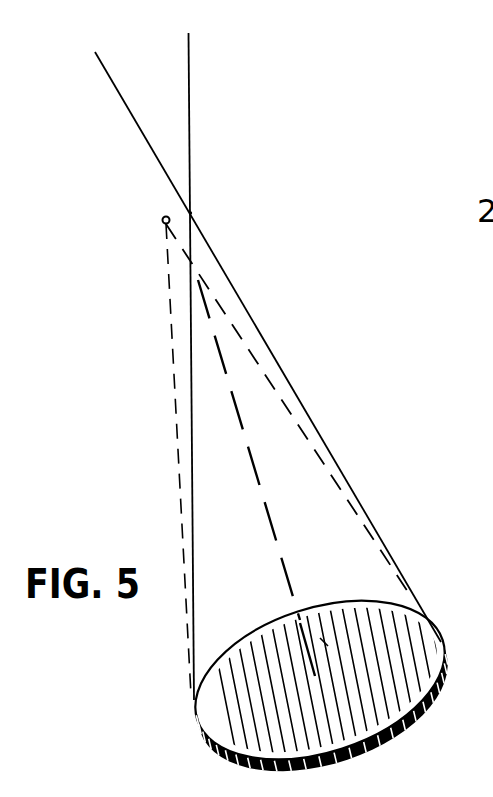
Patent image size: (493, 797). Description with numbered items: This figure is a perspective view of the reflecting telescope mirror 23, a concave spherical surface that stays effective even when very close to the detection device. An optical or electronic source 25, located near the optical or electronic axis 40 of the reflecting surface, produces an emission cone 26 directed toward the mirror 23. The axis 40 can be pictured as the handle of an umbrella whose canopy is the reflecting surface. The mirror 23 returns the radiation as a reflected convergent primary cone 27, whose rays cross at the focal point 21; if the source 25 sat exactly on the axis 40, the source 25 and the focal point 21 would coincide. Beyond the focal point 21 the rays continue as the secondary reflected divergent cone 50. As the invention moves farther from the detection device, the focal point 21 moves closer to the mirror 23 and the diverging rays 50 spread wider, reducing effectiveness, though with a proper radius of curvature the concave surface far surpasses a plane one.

The secondary reflected divergent cone 50 is at (110, 78).
The focal point 21 is at (191, 213).
The optical or electronic source 25 is at (163, 222).
The emission cone 26 is at (177, 437).
The reflected convergent primary cone 27 is at (286, 375).
The optical or electronic axis 40 is at (273, 533).
The reflecting telescope mirror 23 is at (378, 603).